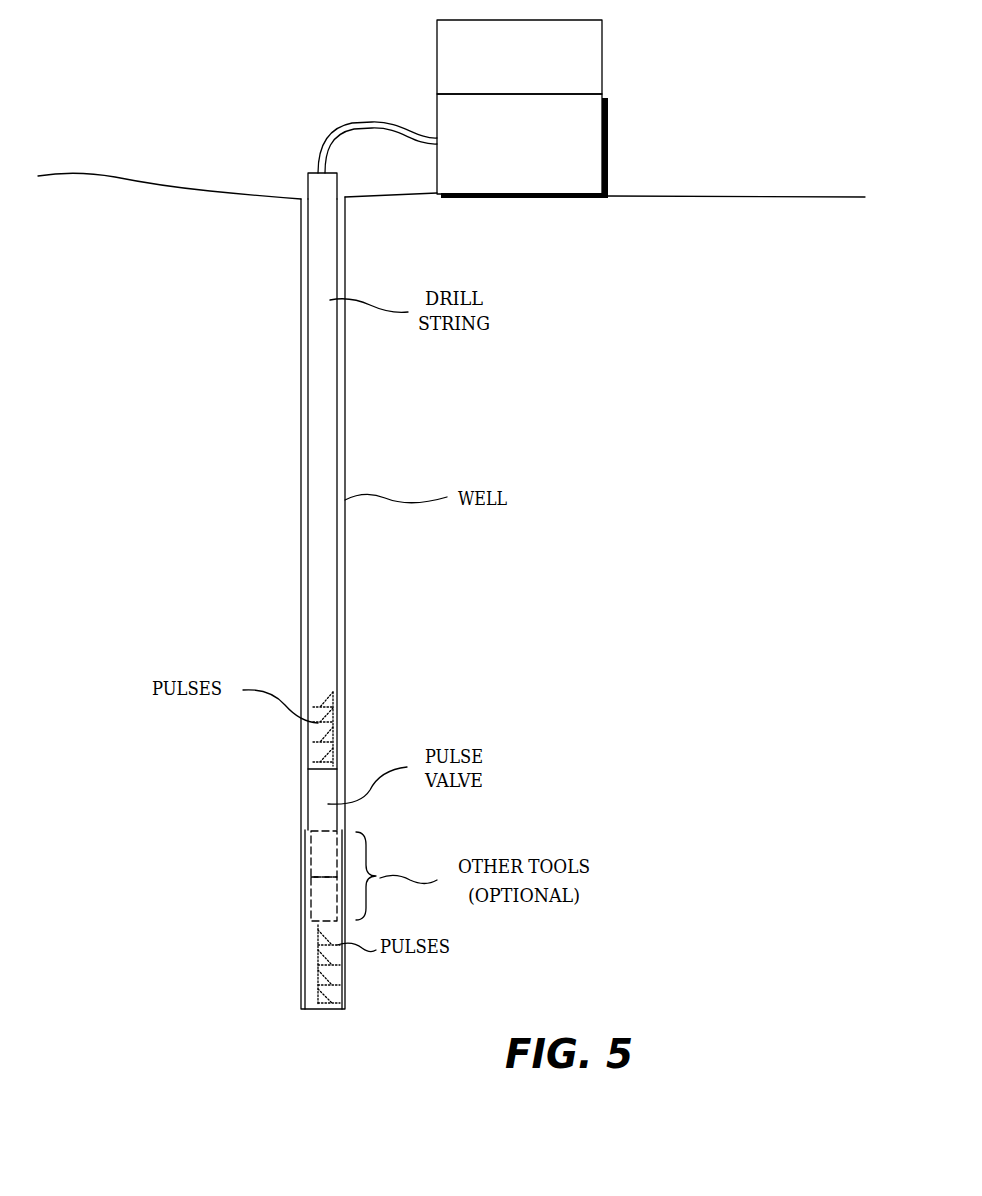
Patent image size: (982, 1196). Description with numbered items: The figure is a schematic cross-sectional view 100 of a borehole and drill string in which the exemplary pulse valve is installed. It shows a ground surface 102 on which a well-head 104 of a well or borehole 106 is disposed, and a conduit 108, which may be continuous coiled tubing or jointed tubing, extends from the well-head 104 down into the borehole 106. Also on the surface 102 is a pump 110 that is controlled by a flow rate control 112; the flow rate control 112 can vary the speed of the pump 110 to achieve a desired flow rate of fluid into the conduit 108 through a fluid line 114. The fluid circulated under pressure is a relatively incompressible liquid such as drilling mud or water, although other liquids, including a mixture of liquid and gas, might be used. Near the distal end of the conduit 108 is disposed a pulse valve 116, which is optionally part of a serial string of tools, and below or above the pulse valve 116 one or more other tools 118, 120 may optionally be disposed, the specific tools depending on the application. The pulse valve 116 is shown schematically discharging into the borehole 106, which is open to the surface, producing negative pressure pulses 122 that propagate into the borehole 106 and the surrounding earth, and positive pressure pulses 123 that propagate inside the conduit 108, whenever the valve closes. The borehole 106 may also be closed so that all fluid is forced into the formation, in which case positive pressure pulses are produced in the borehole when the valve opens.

The schematic cross-sectional view 100 is at (139, 894).
The ground surface 102 is at (148, 182).
The well-head 104 is at (303, 198).
The borehole 106 is at (300, 301).
The conduit 108 is at (312, 384).
The pump 110 is at (437, 110).
The flow rate control 112 is at (437, 50).
The fluid line 114 is at (338, 133).
The pulse valve 116 is at (308, 788).
The other tool 118 is at (311, 857).
The other tool 120 is at (311, 900).
The negative pressure pulses 122 is at (318, 965).
The positive pressure pulses 123 is at (337, 712).